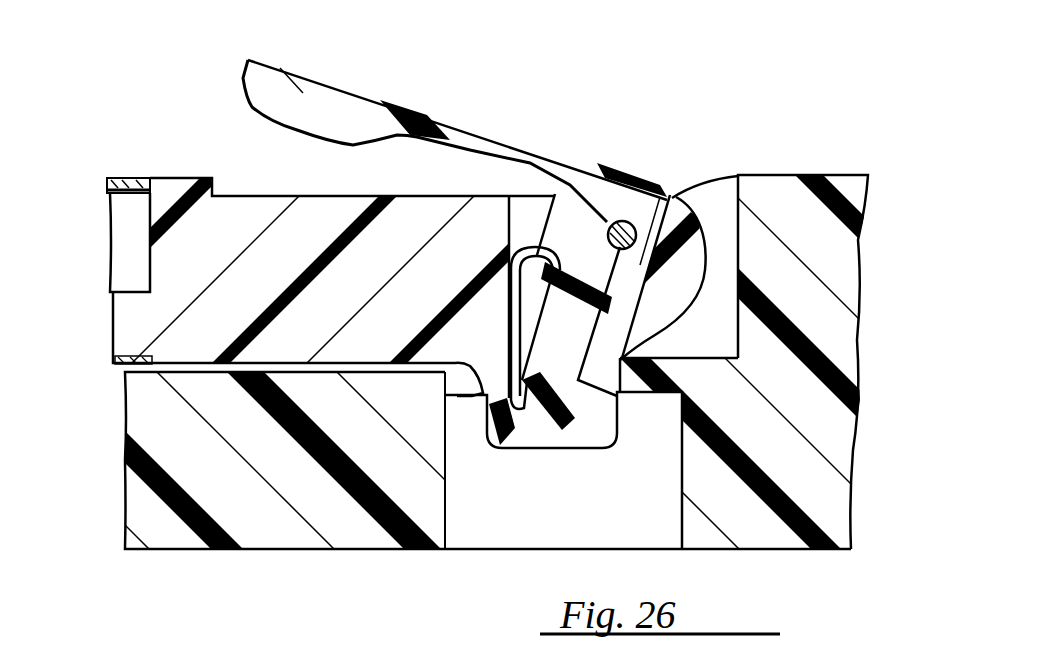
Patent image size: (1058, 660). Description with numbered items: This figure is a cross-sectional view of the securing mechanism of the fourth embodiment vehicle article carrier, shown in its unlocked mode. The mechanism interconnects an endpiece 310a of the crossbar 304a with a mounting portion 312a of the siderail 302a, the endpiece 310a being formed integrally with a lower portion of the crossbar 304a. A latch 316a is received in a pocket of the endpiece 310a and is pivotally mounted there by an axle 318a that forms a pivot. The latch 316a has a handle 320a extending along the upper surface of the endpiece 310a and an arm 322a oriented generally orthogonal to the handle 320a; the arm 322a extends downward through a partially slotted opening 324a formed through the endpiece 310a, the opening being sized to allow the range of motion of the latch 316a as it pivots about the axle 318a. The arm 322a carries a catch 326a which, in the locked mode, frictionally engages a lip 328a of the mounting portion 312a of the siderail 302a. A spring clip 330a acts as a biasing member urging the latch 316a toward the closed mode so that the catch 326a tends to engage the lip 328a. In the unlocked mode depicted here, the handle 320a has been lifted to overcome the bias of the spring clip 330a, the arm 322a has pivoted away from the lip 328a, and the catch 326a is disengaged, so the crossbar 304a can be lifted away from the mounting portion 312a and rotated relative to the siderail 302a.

The siderail 302a is at (168, 540).
The crossbar 304a is at (123, 177).
The endpiece 310a is at (226, 207).
The mounting portion 312a is at (455, 528).
The latch 316a is at (564, 165).
The axle 318a is at (611, 220).
The handle 320a is at (328, 92).
The arm 322a is at (575, 325).
The slotted opening 324a is at (712, 152).
The catch 326a is at (594, 394).
The lip 328a is at (660, 393).
The spring clip 330a is at (527, 207).